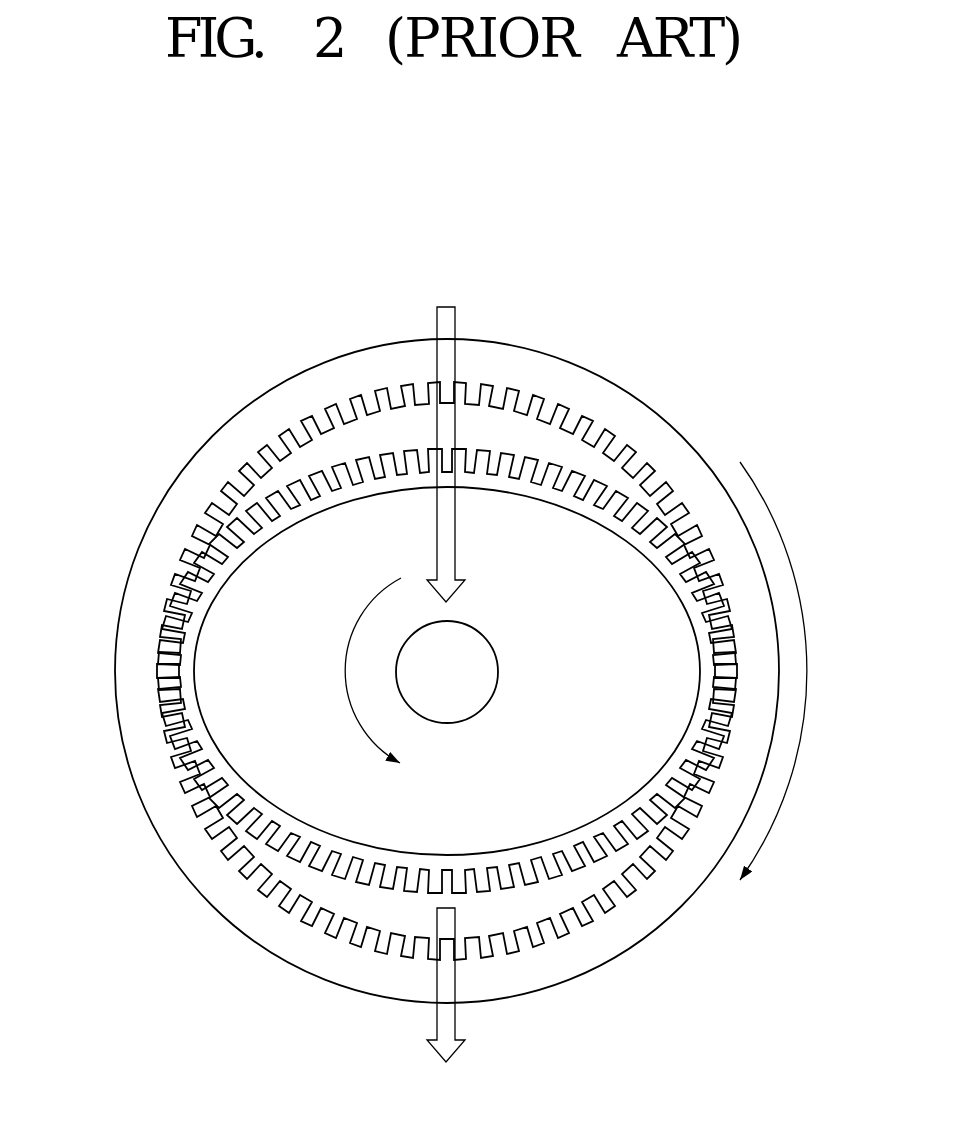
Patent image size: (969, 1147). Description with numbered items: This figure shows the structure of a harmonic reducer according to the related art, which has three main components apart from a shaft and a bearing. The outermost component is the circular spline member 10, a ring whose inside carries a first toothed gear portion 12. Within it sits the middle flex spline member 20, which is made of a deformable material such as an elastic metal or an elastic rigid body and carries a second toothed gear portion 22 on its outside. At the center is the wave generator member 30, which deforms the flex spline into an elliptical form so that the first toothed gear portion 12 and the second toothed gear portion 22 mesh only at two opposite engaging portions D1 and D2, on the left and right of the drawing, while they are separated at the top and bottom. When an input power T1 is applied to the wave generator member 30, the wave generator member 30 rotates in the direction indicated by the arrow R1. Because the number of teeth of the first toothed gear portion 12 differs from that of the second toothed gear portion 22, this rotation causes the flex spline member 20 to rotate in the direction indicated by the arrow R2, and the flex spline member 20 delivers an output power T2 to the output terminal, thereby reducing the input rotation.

The circular spline member 10 is at (447, 629).
The first toothed gear portion 12 is at (498, 403).
The flex spline member 20 is at (456, 621).
The second toothed gear portion 22 is at (555, 467).
The wave generator member 30 is at (303, 547).
The input power T1 is at (446, 435).
The output power T2 is at (446, 1004).
The arrow indicating rotation of wave generator member R1 is at (353, 670).
The arrow indicating rotation of flex spline member R2 is at (794, 671).
The engaging portion D1 is at (155, 670).
The engaging portion D2 is at (735, 665).